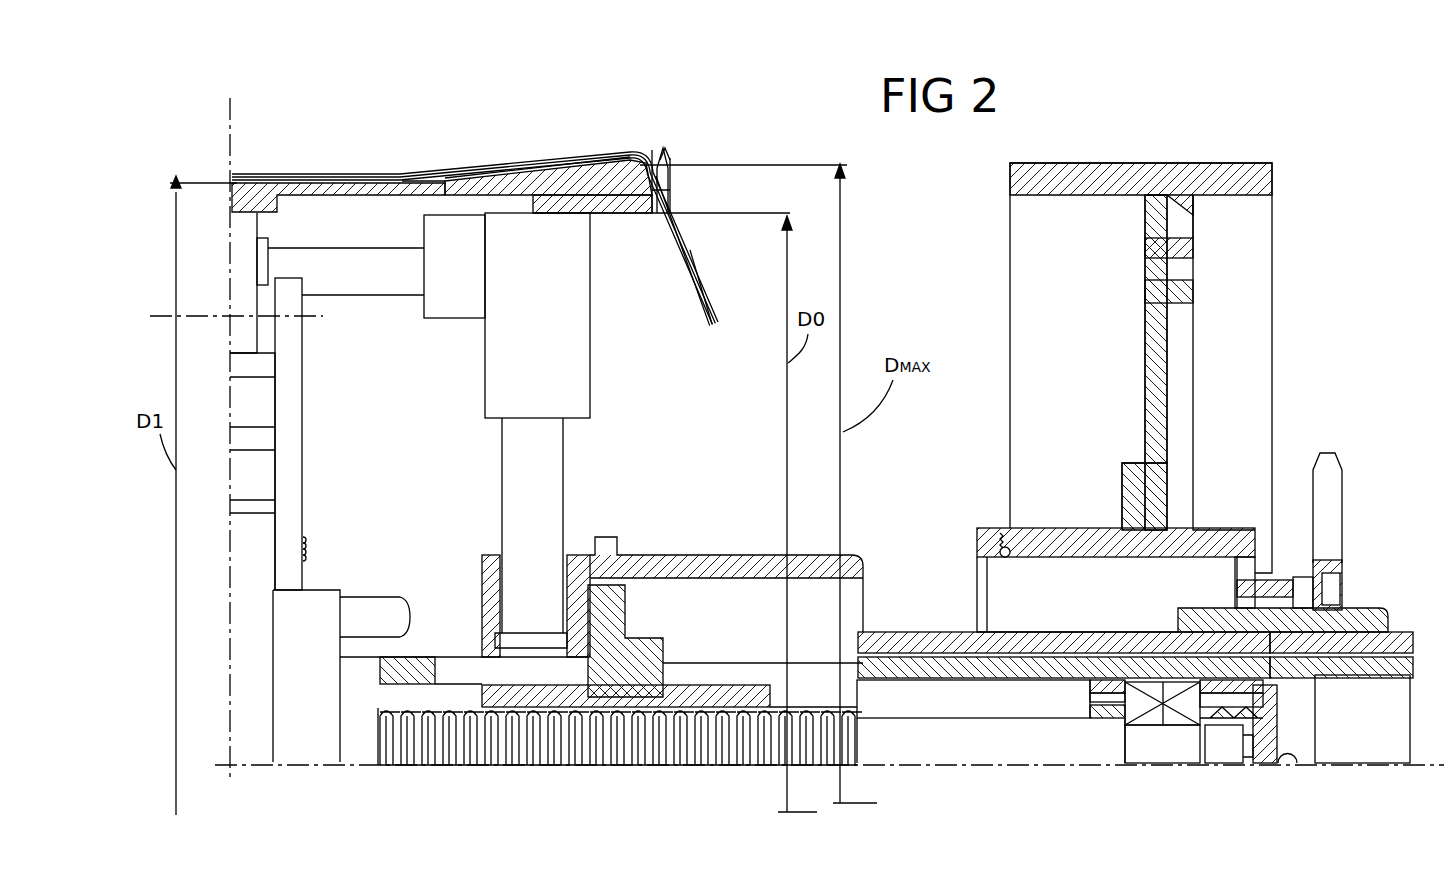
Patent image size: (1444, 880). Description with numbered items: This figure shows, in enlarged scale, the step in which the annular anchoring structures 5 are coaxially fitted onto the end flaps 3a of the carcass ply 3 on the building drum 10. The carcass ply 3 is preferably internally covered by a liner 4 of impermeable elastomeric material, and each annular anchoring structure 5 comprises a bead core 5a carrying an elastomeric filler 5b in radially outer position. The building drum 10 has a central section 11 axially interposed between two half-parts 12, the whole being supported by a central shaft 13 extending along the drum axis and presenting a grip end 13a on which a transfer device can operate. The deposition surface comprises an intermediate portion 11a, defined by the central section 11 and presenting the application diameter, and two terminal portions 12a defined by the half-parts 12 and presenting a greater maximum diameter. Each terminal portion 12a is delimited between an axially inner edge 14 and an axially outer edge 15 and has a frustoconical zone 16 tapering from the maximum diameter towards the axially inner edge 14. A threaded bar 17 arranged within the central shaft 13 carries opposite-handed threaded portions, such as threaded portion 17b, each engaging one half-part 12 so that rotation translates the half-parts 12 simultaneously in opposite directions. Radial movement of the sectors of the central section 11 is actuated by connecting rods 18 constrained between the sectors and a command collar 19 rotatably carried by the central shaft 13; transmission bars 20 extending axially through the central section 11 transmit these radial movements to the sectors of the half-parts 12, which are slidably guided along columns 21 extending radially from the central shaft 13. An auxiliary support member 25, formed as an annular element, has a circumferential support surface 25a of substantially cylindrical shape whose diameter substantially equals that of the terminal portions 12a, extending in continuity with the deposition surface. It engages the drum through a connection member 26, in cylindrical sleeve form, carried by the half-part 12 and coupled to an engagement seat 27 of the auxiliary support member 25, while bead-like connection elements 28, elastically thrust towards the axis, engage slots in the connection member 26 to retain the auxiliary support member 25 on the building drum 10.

The carcass ply 3 is at (543, 177).
The end flaps 3a is at (705, 296).
The liner 4 is at (400, 181).
The annular anchoring structures 5 is at (668, 180).
The bead core 5a is at (668, 208).
The elastomeric filler 5b is at (668, 162).
The building drum 10 is at (211, 704).
The central section 11 is at (262, 198).
The intermediate portion 11a is at (323, 180).
The half-parts 12 is at (588, 180).
The terminal portions 12a is at (493, 172).
The central shaft 13 is at (978, 673).
The grip end 13a is at (1380, 666).
The axially inner edge 14 is at (410, 174).
The axially outer edge 15 is at (668, 200).
The frustoconical zones 16 is at (567, 173).
The threaded bar 17 is at (1040, 749).
The threaded portion 17b is at (653, 748).
The connecting rods 18 is at (288, 452).
The command collar 19 is at (275, 638).
The transmission bars 20 is at (388, 274).
The columns 21 is at (543, 498).
The auxiliary support members 25 is at (1257, 244).
The circumferential support surfaces 25a is at (1167, 163).
The connection members 26 is at (858, 548).
The engagement seat 27 is at (1005, 588).
The connection elements 28 is at (987, 528).